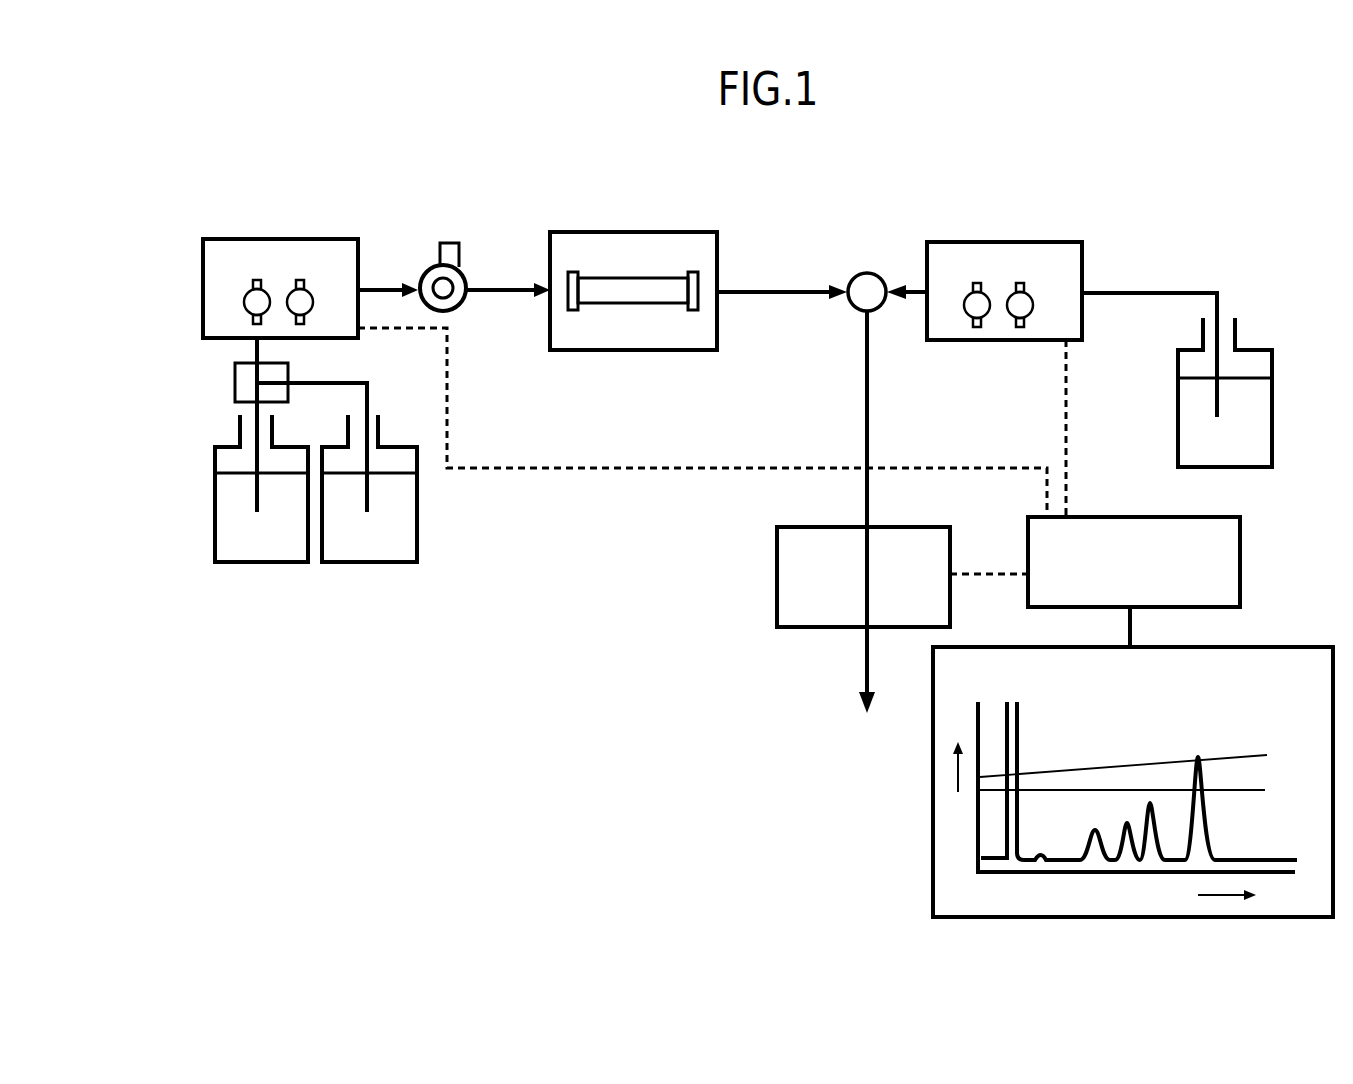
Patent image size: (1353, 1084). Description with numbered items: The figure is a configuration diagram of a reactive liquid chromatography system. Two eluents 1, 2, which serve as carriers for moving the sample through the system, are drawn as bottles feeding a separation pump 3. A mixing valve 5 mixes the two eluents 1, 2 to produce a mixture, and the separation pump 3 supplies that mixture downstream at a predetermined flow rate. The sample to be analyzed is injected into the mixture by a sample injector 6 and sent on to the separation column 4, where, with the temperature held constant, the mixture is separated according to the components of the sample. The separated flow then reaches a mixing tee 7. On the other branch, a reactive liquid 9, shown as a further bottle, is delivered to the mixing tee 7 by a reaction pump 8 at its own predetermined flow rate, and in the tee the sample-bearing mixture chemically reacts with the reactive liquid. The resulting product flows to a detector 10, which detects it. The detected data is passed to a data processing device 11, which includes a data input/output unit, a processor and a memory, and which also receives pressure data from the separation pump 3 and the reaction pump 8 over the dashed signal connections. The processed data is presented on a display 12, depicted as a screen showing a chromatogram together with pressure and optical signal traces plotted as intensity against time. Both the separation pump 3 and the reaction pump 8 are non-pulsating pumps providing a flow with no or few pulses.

The eluent 1 is at (258, 562).
The eluent 2 is at (370, 562).
The separation pump 3 is at (273, 239).
The separation column 4 is at (625, 232).
The mixing valve 5 is at (288, 372).
The sample injector 6 is at (448, 243).
The mixing tee 7 is at (867, 272).
The reaction pump 8 is at (997, 242).
The reactive liquid 9 is at (1258, 418).
The detector 10 is at (777, 575).
The data processing device 11 is at (1240, 560).
The display 12 is at (933, 796).